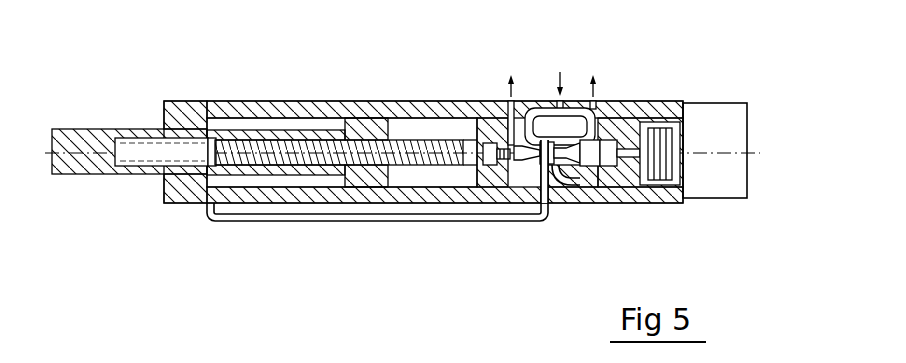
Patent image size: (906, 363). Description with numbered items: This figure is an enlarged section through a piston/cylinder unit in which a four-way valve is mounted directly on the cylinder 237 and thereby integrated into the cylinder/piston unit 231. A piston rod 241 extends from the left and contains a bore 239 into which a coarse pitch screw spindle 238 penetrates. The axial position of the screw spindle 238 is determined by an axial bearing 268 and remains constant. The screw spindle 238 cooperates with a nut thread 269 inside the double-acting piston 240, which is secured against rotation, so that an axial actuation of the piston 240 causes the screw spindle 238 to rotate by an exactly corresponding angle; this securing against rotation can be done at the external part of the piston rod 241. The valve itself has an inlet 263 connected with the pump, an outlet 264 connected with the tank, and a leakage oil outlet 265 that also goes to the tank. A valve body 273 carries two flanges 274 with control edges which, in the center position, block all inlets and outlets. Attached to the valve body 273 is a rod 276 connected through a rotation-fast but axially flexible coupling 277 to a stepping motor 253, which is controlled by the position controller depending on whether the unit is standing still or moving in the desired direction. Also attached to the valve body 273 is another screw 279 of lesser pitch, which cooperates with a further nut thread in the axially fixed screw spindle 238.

The cylinder/piston unit 231 is at (178, 205).
The cylinder 237 is at (248, 102).
The coarse pitch screw spindle 238 is at (207, 128).
The bore 239 is at (142, 152).
The double-acting piston 240 is at (358, 120).
The piston rod 241 is at (70, 127).
The stepping motor 253 is at (727, 200).
The inlet 263 is at (572, 68).
The outlet 264 is at (602, 82).
The leakage oil outlet 265 is at (506, 97).
The axial bearing 268 is at (490, 172).
The nut thread 269 is at (345, 168).
The valve body 273 is at (608, 168).
The flanges 274 is at (577, 188).
The rod 276 is at (628, 152).
The coupling 277 is at (650, 160).
The screw 279 is at (502, 166).